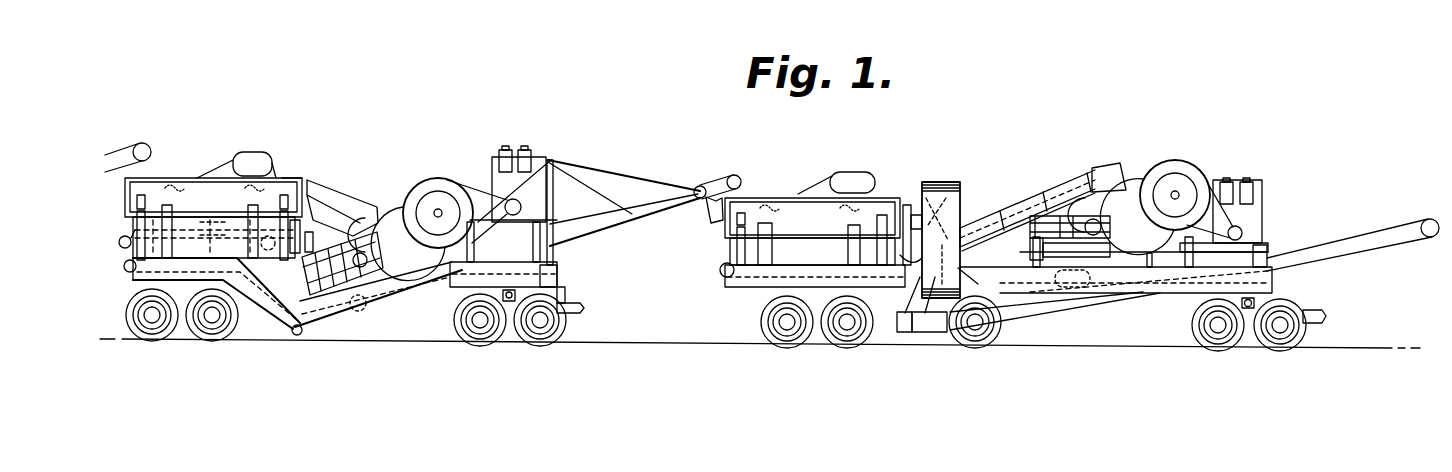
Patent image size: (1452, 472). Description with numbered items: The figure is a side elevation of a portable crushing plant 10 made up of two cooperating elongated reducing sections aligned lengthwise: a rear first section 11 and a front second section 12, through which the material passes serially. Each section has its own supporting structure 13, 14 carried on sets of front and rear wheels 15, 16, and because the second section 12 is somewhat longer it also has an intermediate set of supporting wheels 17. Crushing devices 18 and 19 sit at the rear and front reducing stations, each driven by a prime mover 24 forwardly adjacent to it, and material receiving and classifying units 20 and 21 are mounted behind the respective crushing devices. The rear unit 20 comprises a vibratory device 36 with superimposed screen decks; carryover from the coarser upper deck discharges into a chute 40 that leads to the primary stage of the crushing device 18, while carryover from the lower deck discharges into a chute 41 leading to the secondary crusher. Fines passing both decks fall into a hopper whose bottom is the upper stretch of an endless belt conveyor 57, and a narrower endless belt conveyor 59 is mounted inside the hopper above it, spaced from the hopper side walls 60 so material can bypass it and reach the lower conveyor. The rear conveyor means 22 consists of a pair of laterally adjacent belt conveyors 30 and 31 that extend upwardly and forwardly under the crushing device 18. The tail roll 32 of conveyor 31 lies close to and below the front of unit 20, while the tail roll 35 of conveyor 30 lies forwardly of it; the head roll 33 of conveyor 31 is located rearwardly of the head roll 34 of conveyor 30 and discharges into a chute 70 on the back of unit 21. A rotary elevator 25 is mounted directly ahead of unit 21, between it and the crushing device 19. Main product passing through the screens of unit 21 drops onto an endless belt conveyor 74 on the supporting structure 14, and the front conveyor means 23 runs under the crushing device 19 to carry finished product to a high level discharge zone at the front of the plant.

The crushing plant 10 is at (700, 127).
The first section 11 is at (352, 141).
The second section 12 is at (1050, 157).
The supporting structure 13 is at (270, 313).
The supporting structure 14 is at (760, 286).
The front wheels 15 is at (510, 339).
The rear wheels 16 is at (184, 334).
The intermediate set of supporting wheels 17 is at (977, 343).
The rear crushing device 18 is at (407, 187).
The front crushing device 19 is at (1148, 159).
The material receiving and classifying unit 20 is at (181, 163).
The material receiving and classifying unit 21 is at (858, 138).
The rear conveyor means 22 is at (606, 248).
The front conveyor means 23 is at (1366, 210).
The prime mover 24 is at (517, 156).
The elevator 25 is at (943, 167).
The belt conveyor 30 is at (725, 150).
The belt conveyor 31 is at (585, 222).
The tail roll 32 is at (292, 334).
The head roll 33 is at (698, 186).
The head roll 34 is at (741, 178).
The tail roll 35 is at (368, 313).
The vibratory device 36 is at (283, 179).
The chute 40 is at (327, 193).
The chute 41 is at (333, 219).
The endless belt conveyor 57 is at (133, 272).
The endless belt conveyor 59 is at (120, 241).
The side walls 60 is at (222, 228).
The chute 70 is at (713, 216).
The endless belt conveyor 74 is at (721, 272).